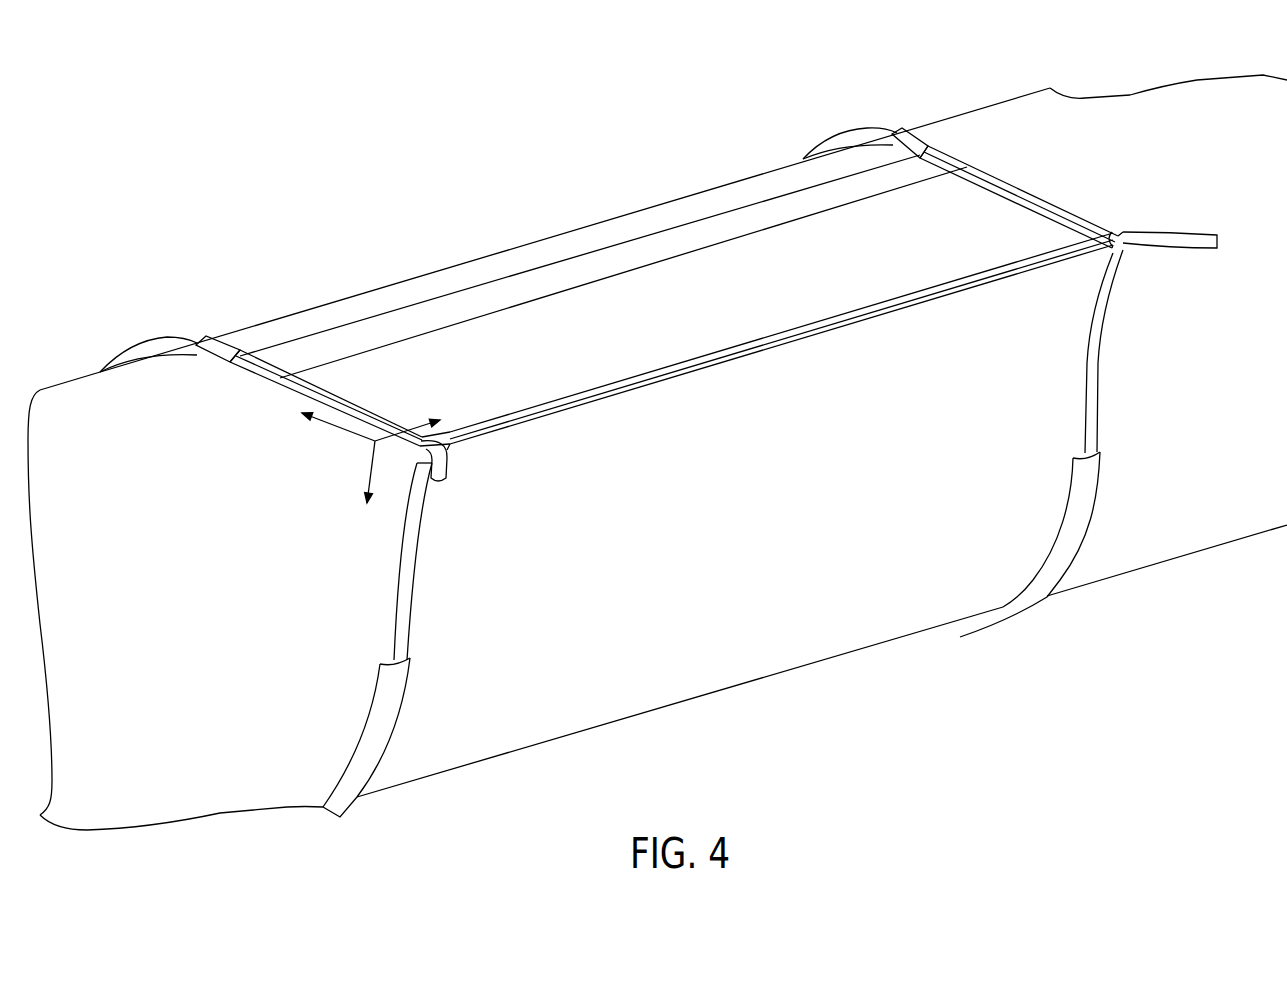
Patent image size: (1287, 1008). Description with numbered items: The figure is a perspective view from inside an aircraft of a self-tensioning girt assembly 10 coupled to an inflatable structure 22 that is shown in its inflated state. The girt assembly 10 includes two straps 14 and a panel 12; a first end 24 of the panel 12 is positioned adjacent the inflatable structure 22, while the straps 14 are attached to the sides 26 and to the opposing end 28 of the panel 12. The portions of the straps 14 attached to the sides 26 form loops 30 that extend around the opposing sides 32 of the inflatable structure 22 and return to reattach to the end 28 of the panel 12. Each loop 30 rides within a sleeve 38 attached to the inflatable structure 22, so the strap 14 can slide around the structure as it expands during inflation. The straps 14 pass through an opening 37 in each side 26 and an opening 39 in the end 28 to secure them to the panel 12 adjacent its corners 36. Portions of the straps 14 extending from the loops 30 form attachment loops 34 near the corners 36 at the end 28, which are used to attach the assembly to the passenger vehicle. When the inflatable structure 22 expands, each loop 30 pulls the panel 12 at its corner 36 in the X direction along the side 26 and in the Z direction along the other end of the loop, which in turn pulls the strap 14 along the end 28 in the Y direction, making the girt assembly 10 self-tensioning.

The self-tensioning girt assembly 10 is at (463, 182).
The panel 12 is at (603, 266).
The strap 14 is at (231, 346).
The inflatable structure 22 is at (120, 805).
The first end of the panel 24 is at (577, 253).
The sides of the panel 26 is at (280, 382).
The opposing end of the panel 28 is at (790, 343).
The loop 30 is at (408, 640).
The opposing sides of the inflatable structure 32 is at (298, 788).
The attachment loop 34 is at (440, 483).
The corner of the panel 36 is at (450, 433).
The opening of the sides 37 is at (417, 460).
The sleeve 38 is at (357, 788).
The opening of the end 39 is at (463, 447).